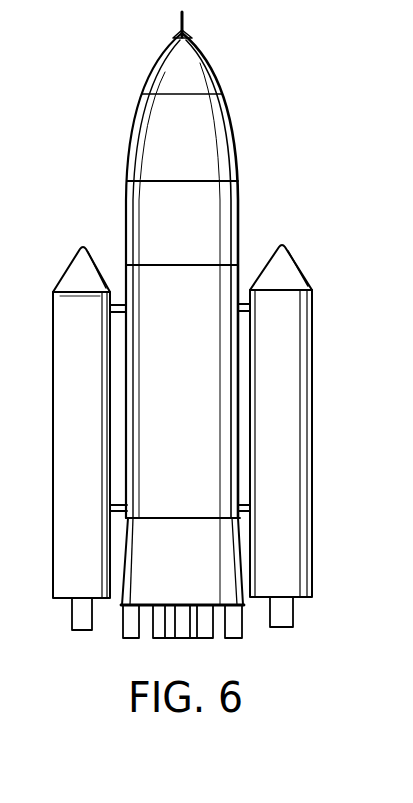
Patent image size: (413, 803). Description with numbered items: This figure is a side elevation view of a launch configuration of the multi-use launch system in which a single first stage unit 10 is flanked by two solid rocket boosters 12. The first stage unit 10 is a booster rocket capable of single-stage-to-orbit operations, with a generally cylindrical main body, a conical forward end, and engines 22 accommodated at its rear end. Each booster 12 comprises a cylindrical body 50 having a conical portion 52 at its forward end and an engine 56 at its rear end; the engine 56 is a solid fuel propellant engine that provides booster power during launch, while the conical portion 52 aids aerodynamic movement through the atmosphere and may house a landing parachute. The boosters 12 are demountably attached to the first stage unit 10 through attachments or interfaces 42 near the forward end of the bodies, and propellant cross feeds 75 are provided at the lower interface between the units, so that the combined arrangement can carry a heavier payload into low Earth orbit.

The first stage unit 10 is at (213, 342).
The solid rocket booster 12 is at (186, 432).
The engines 22 is at (219, 640).
The attachments or interfaces 42 is at (250, 310).
The cylindrical body 50 is at (73, 523).
The conical portion 52 is at (73, 268).
The engine 56 is at (80, 613).
The propellant cross feeds 75 is at (250, 506).